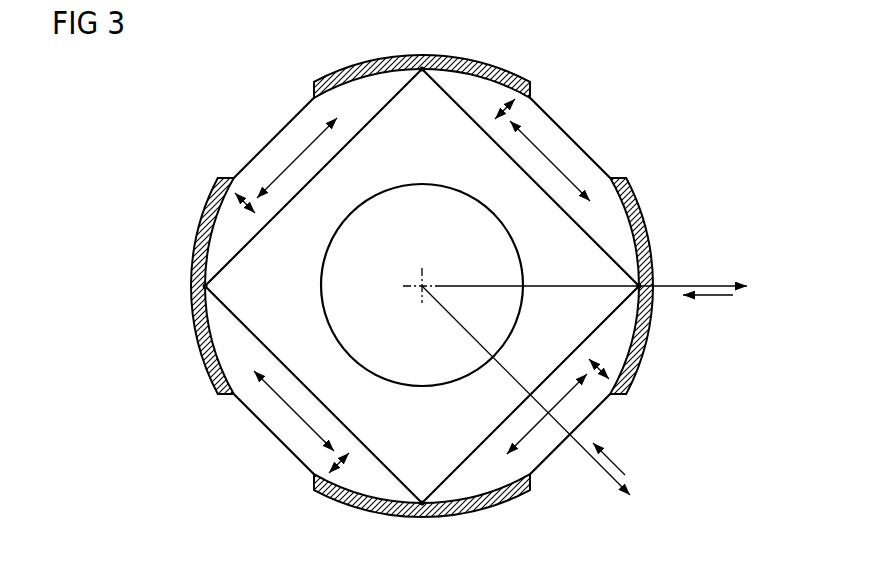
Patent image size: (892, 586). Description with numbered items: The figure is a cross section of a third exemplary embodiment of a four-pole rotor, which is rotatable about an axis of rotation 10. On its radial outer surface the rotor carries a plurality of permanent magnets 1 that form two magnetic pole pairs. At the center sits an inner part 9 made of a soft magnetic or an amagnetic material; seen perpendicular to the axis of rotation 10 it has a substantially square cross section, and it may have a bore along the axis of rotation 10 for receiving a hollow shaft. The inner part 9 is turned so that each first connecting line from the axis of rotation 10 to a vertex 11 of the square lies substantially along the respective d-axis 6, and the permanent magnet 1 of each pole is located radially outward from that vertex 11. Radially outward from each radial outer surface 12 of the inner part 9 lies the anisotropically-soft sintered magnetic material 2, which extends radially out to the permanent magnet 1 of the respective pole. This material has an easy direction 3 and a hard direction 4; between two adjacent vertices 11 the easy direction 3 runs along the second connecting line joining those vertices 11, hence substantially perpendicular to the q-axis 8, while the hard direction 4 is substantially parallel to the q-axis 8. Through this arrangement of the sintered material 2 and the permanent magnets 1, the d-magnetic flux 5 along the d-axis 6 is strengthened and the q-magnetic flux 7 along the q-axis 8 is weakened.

The permanent magnet 1 is at (460, 57).
The anisotropically-soft sintered magnetic material 2 is at (277, 142).
The easy direction 3 is at (313, 140).
The hard direction 4 is at (505, 106).
The d-magnetic flux 5 is at (715, 300).
The d-axis 6 is at (715, 282).
The q-magnetic flux 7 is at (611, 457).
The q-axis 8 is at (611, 481).
The inner part 9 is at (432, 184).
The axis of rotation 10 is at (420, 283).
The vertex 11 is at (422, 71).
The radial outer surface 12 is at (280, 211).